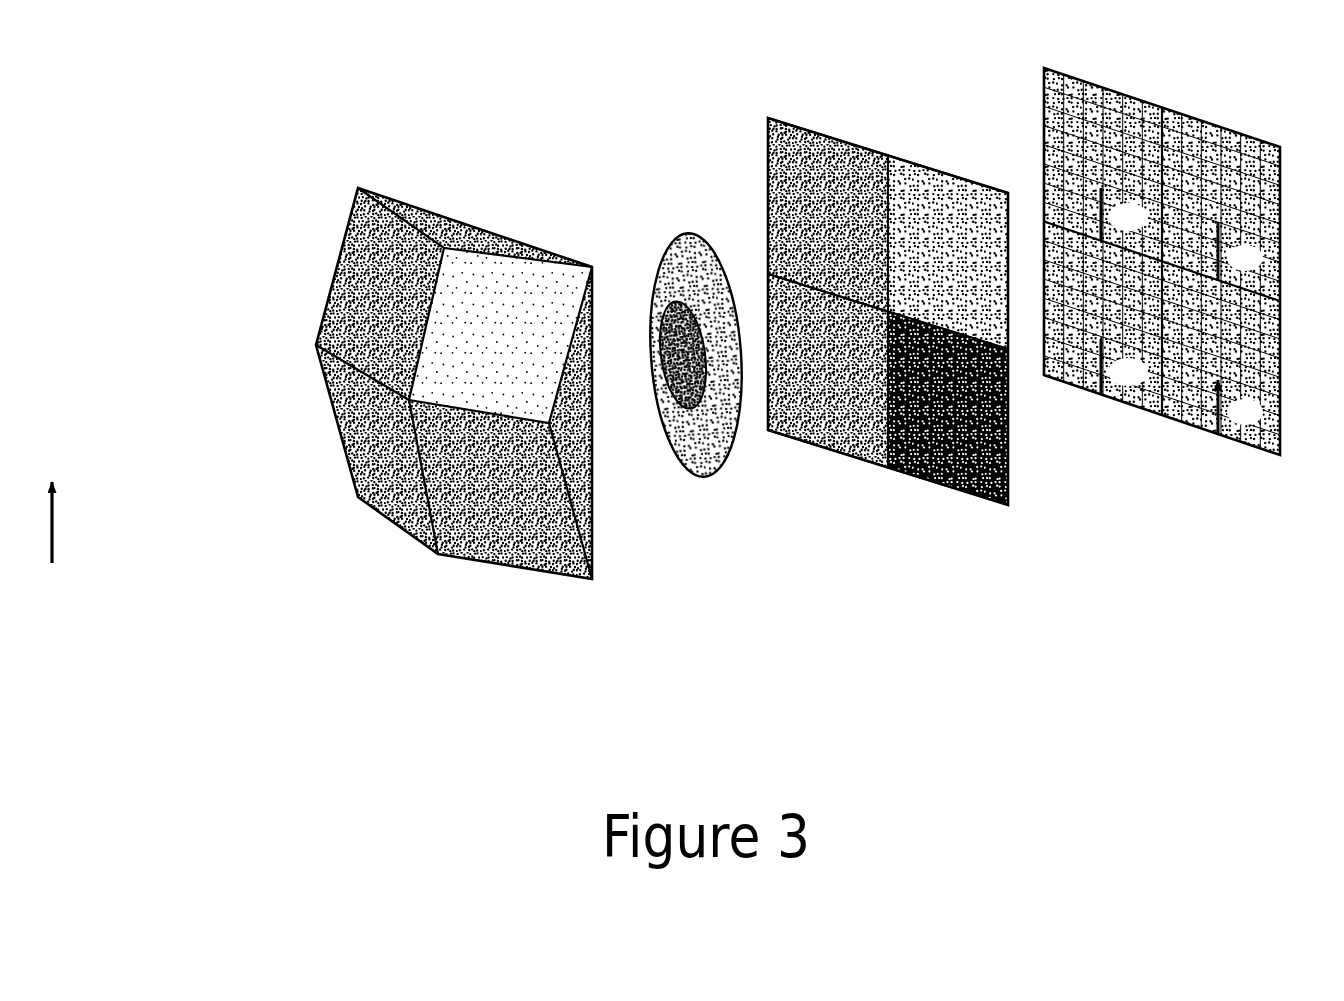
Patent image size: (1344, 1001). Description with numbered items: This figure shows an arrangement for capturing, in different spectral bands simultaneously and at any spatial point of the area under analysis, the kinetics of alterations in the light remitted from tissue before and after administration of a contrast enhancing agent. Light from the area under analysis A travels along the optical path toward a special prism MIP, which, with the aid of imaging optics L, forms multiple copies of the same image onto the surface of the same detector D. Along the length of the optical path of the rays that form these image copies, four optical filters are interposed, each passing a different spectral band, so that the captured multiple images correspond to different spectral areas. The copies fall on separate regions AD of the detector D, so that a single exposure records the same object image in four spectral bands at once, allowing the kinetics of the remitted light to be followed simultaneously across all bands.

The special prism MIP is at (444, 213).
The imaging optics L is at (668, 250).
The detector D is at (1184, 315).
The detector active area AD is at (1182, 311).
The optical axis direction A is at (52, 555).